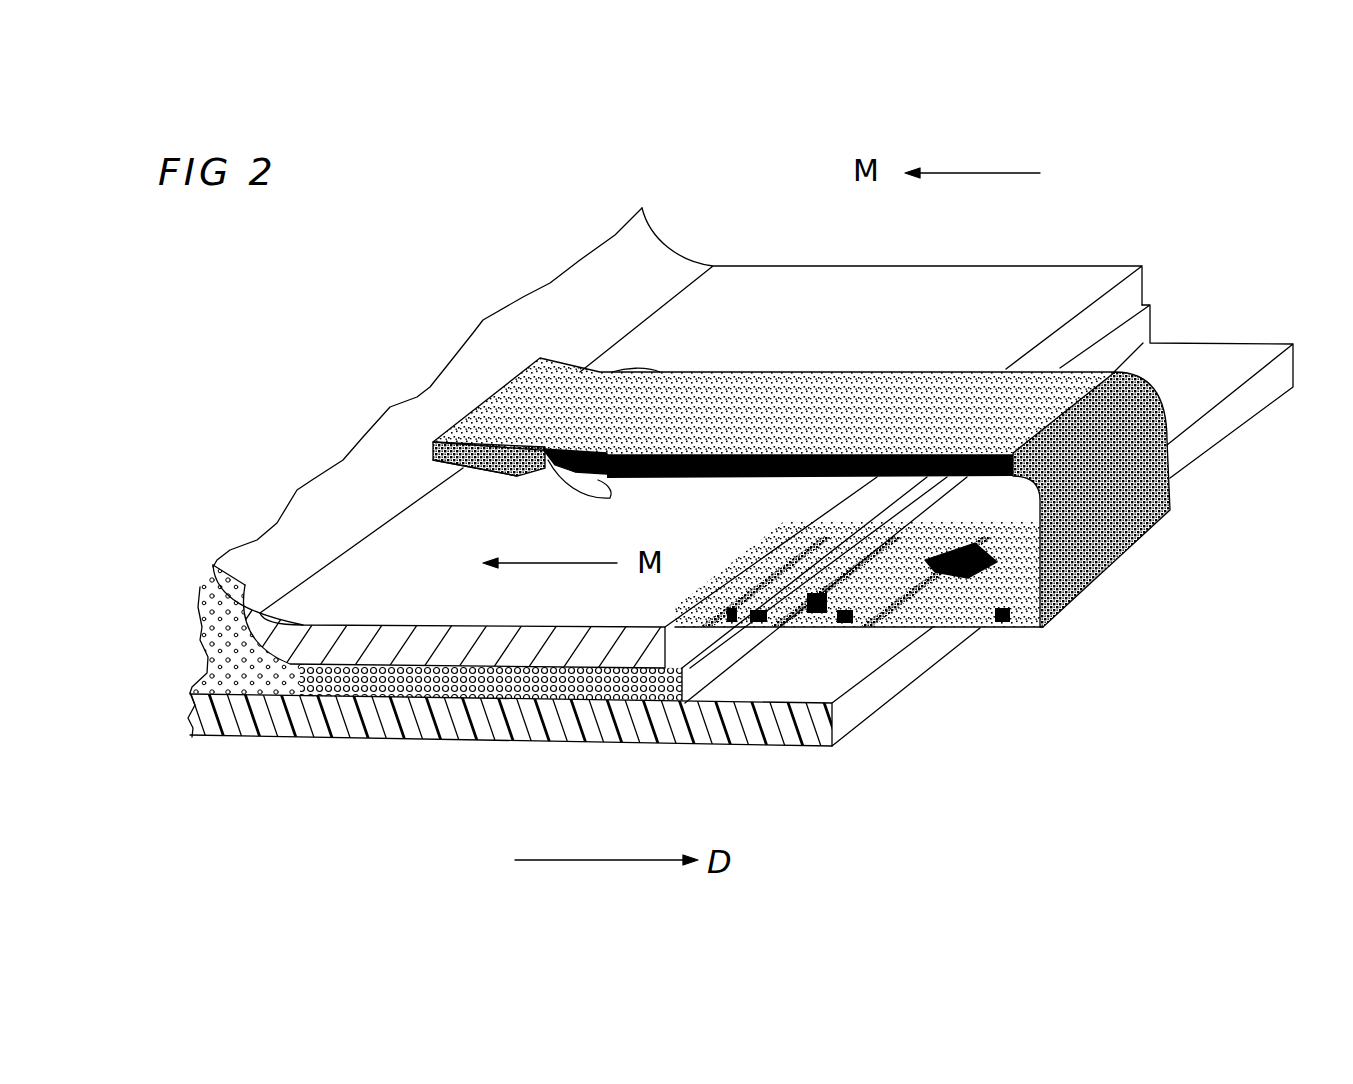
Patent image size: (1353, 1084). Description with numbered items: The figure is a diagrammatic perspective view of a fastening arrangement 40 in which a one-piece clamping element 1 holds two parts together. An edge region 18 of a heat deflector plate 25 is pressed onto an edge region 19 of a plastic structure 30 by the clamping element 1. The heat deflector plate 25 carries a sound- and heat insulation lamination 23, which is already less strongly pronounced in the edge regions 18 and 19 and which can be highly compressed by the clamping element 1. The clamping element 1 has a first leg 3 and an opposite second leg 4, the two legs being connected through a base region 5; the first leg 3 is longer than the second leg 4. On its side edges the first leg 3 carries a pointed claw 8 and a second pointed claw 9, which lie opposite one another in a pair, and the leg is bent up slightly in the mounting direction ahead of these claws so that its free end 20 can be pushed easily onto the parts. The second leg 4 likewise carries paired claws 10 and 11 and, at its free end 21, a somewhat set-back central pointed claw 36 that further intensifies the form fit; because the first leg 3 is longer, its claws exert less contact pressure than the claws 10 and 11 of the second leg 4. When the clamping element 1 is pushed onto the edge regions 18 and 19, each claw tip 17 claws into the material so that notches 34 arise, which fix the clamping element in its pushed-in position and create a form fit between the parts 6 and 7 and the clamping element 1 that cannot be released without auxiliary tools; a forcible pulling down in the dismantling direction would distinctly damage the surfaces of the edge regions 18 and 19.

The clamping element 1 is at (750, 372).
The first leg 3 is at (882, 382).
The second leg 4 is at (1002, 628).
The base region 5 is at (1170, 437).
The part 6 is at (245, 585).
The part 7 is at (277, 738).
The pointed claw 8 is at (627, 383).
The second pointed claw 9 is at (542, 478).
The claw 10 is at (935, 505).
The claw 11 is at (787, 610).
The claw tip 17 is at (600, 498).
The edge region 18 is at (970, 278).
The edge region 19 is at (750, 690).
The free end 20 is at (478, 400).
The free end 21 is at (755, 552).
The sound- and heat insulation lamination 23 is at (217, 658).
The heat deflector plate 25 is at (220, 570).
The plastic structure 30 is at (210, 708).
The notch 34 is at (613, 504).
The central pointed claw 36 is at (905, 605).
The fastening arrangement 40 is at (1127, 208).